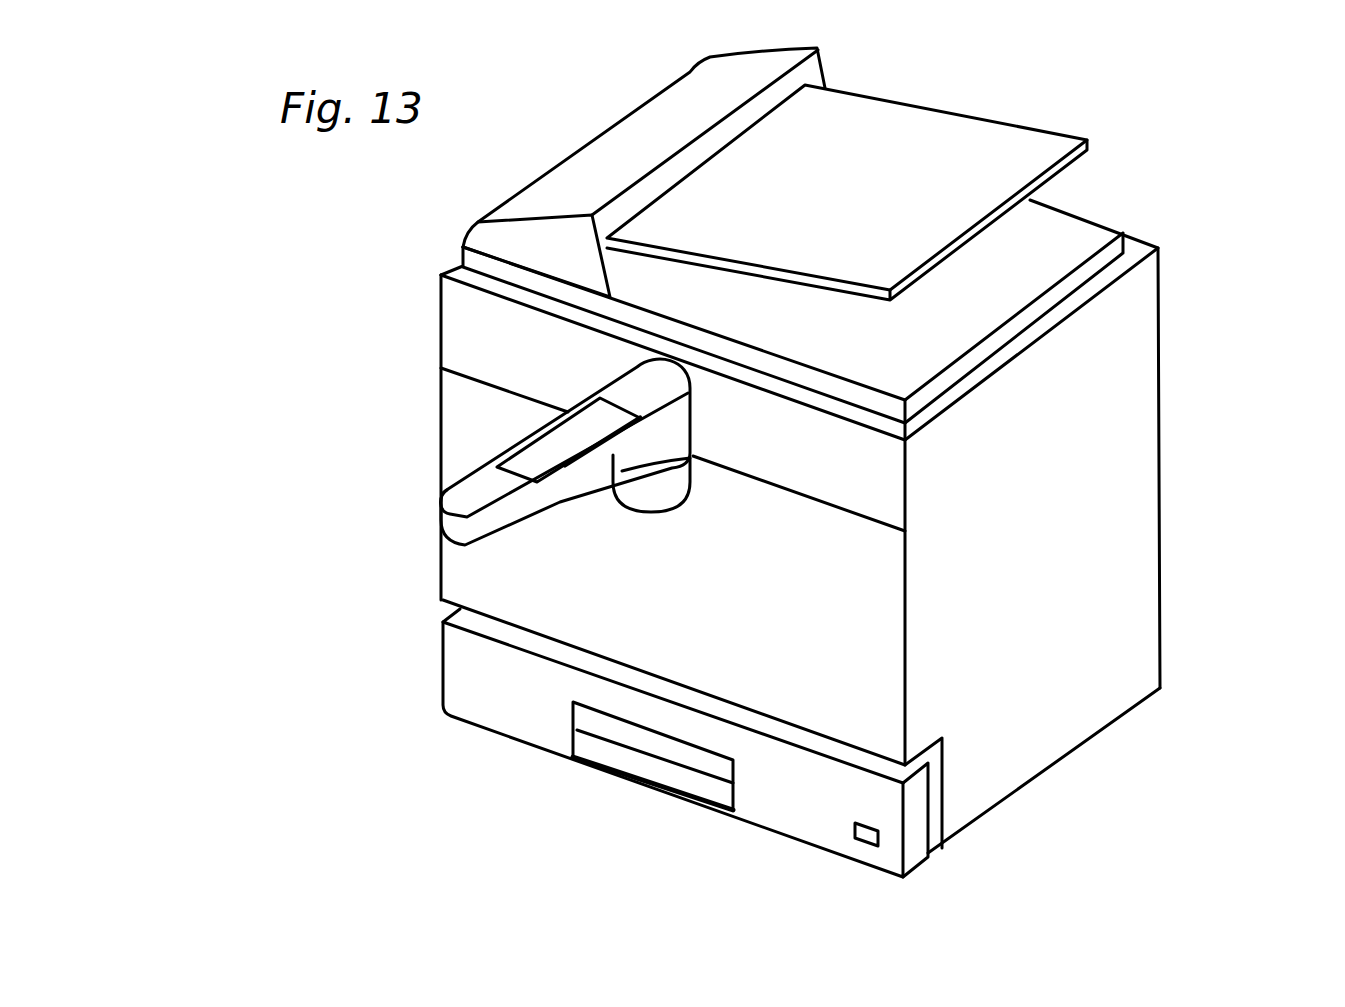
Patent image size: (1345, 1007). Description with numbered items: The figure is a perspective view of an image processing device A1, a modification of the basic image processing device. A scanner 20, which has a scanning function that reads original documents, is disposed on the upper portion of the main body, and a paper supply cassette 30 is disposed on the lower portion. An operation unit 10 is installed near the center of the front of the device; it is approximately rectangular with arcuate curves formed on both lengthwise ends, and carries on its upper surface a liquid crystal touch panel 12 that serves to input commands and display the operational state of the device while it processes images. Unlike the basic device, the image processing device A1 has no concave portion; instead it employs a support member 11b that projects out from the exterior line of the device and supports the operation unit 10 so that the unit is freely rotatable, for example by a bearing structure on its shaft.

The image processing device A1 is at (1158, 197).
The scanner 20 is at (910, 195).
The operation unit 10 is at (460, 510).
The liquid crystal touch panel 12 is at (553, 455).
The support member 11b is at (661, 499).
The paper supply cassette 30 is at (884, 820).